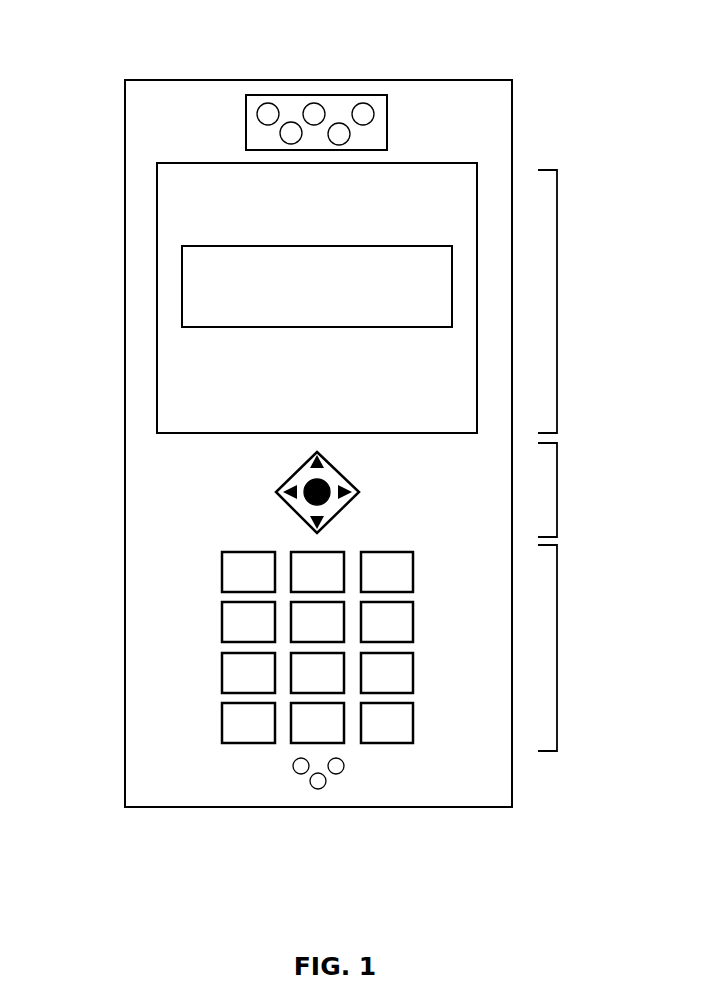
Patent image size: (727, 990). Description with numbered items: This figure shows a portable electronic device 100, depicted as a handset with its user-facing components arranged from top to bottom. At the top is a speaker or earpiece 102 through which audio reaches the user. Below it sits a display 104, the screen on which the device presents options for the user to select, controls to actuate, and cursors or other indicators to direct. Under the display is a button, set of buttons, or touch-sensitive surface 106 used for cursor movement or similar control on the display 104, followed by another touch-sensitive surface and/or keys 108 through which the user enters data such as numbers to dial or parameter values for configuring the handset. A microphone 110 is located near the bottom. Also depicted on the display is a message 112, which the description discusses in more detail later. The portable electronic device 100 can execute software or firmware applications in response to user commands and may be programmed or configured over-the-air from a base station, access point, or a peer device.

The portable electronic device 100 is at (130, 78).
The speaker or earpiece 102 is at (347, 95).
The display 104 is at (557, 298).
The button, set of buttons, or touch-sensitive surface 106 is at (557, 490).
The touch-sensitive surface and/or keys 108 is at (557, 636).
The microphone 110 is at (318, 789).
The message 112 is at (182, 288).